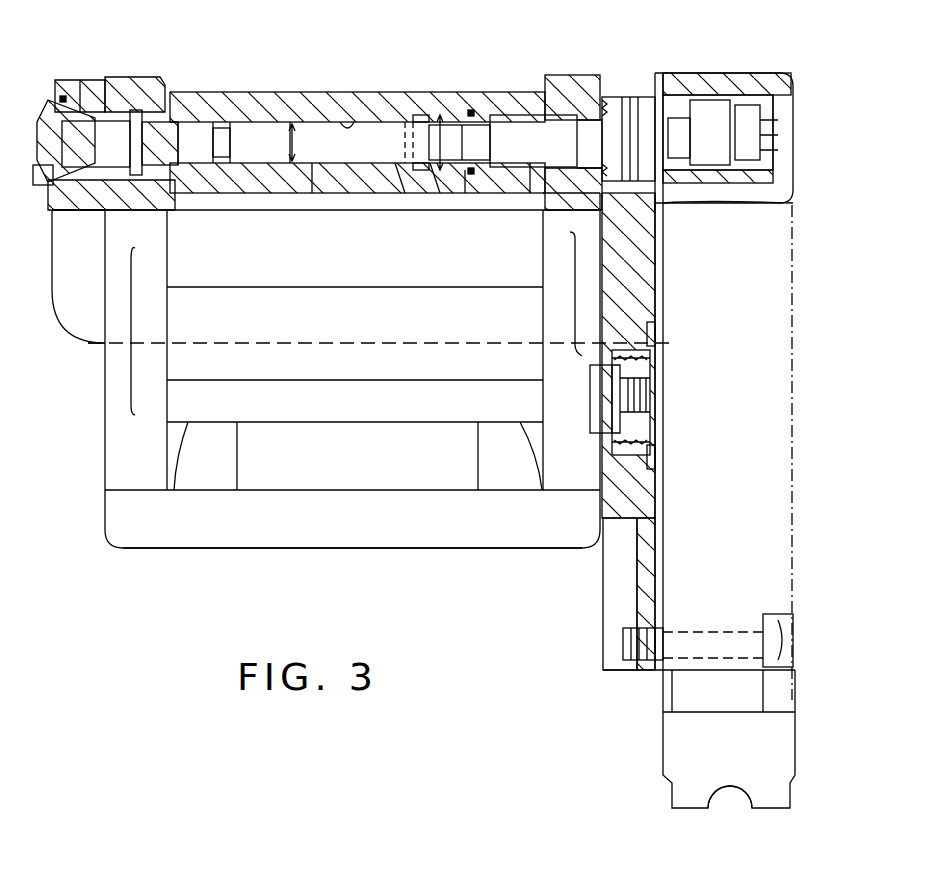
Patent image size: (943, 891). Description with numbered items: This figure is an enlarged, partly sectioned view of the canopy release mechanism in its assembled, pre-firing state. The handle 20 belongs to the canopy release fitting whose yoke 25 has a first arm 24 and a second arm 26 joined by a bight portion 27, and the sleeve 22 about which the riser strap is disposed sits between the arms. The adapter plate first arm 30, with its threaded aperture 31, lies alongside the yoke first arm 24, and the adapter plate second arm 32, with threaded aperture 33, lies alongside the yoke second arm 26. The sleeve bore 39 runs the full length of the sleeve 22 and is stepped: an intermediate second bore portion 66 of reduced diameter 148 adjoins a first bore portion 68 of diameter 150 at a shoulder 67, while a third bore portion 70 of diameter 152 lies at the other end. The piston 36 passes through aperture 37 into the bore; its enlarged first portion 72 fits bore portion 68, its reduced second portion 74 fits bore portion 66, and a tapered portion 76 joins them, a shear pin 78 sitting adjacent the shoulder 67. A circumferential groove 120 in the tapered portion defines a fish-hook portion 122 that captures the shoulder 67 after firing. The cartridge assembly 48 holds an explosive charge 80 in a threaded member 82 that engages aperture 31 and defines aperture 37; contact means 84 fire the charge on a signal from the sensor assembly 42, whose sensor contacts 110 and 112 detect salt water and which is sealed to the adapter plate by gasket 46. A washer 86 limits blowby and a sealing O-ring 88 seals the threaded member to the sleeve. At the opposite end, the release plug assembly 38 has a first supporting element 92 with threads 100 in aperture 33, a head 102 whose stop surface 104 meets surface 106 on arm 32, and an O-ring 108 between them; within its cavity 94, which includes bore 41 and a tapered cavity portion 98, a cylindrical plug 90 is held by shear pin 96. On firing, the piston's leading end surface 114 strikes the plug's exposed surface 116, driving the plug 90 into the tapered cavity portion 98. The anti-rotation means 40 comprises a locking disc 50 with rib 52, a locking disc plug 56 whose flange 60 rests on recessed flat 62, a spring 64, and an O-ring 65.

The handle 20 is at (170, 437).
The sleeve 22 is at (310, 92).
The first arm of yoke 24 is at (553, 262).
The yoke 25 is at (170, 62).
The second arm of yoke 26 is at (167, 287).
The bight portion 27 is at (182, 548).
The adapter plate first arm 30 is at (646, 305).
The threaded aperture 31 is at (590, 200).
The adapter plate second arm 32 is at (82, 330).
The threaded aperture 33 is at (92, 192).
The piston 36 is at (426, 115).
The aperture 37 is at (528, 190).
The release plug assembly 38 is at (35, 112).
The sleeve bore 39 is at (346, 122).
The anti-rotation means 40 is at (677, 383).
The aperture 41 is at (146, 196).
The sensor assembly 42 is at (800, 297).
The gasket 46 is at (662, 242).
The cartridge assembly 48 is at (616, 105).
The locking disc 50 is at (603, 420).
The rib 52 is at (600, 392).
The locking disc plug 56 is at (640, 365).
The flange 60 is at (650, 434).
The recessed flat 62 is at (655, 456).
The spring 64 is at (648, 400).
The O-ring 65 is at (650, 333).
The second bore portion 66 is at (228, 188).
The shoulder 67 is at (398, 190).
The first bore portion 68 is at (432, 178).
The third bore portion 70 is at (210, 188).
The enlarged-diameter first portion of piston 72 is at (562, 104).
The reduced-diameter second portion of piston 74 is at (314, 170).
The tapered portion 76 is at (466, 132).
The shear pin 78 is at (405, 130).
The explosive charge 80 is at (590, 125).
The threaded member 82 is at (618, 120).
The contact means 84 is at (726, 95).
The washer 86 is at (586, 90).
The sealing O-ring 88 is at (540, 114).
The cylindrical plug 90 is at (186, 125).
The first supporting element 92 is at (76, 100).
The cavity 94 is at (110, 96).
The shear pin 96 is at (150, 92).
The tapered cavity portion 98 is at (40, 162).
The threads 100 is at (52, 245).
The head 102 is at (46, 186).
The stop surface 104 is at (52, 212).
The surface 106 is at (52, 300).
The O-ring 108 is at (62, 96).
The sensor contact 110 is at (700, 713).
The sensor contact 112 is at (730, 795).
The leading end surface 114 is at (284, 140).
The exposed surface 116 is at (214, 130).
The circumferential groove 120 is at (533, 141).
The fish-hook portion 122 is at (450, 115).
The reduced diameter 148 is at (291, 165).
The enlarged diameter 150 is at (467, 185).
The enlarged diameter 152 is at (180, 192).